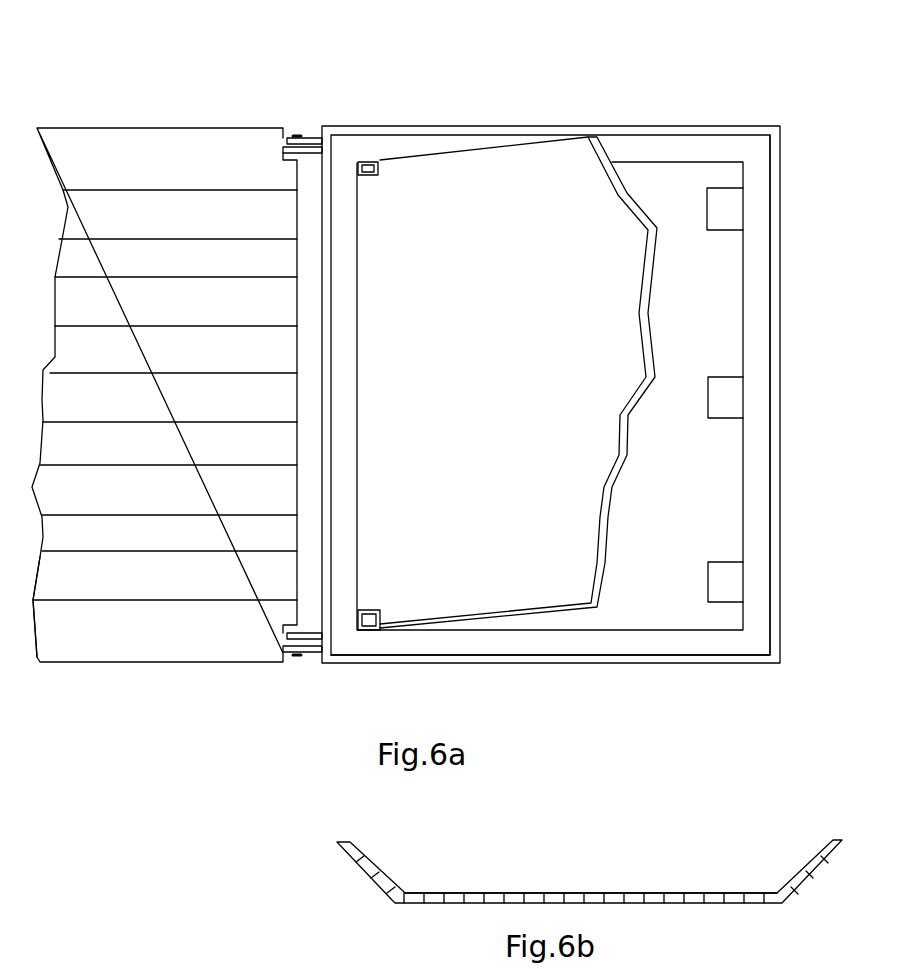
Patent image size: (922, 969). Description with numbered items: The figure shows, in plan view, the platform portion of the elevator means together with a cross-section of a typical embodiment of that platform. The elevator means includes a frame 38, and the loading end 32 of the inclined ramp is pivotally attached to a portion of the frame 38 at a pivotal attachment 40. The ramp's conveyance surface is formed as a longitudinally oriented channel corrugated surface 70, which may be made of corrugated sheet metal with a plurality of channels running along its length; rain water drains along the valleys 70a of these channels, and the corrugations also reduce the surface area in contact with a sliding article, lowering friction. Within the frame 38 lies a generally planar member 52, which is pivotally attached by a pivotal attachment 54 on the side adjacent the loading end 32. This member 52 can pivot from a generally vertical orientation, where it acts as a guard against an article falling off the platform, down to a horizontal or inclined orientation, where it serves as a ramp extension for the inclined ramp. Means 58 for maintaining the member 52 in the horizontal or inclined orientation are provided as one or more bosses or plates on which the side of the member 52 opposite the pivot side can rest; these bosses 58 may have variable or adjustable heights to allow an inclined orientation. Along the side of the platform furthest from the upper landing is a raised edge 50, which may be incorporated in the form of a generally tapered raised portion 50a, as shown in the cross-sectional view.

In FIG. 6A, the loading end 32 is at (444, 100).
In FIG. 6A, the frame 38 is at (655, 127).
In FIG. 6A, the pivotal attachment 40 is at (303, 655).
In FIG. 6B, the raised edge 50 is at (830, 842).
In FIG. 6A, the tapered raised portion 50a is at (692, 148).
In FIG. 6B, the tapered raised portion 50a is at (777, 893).
In FIG. 6A, the generally planar member 52 is at (522, 347).
In FIG. 6A, the pivotal attachment 54 is at (360, 162).
In FIG. 6A, the means for maintaining 58 is at (735, 217).
In FIG. 6A, the channel corrugated surface 70 is at (135, 218).
In FIG. 6A, the valleys 70a is at (73, 535).